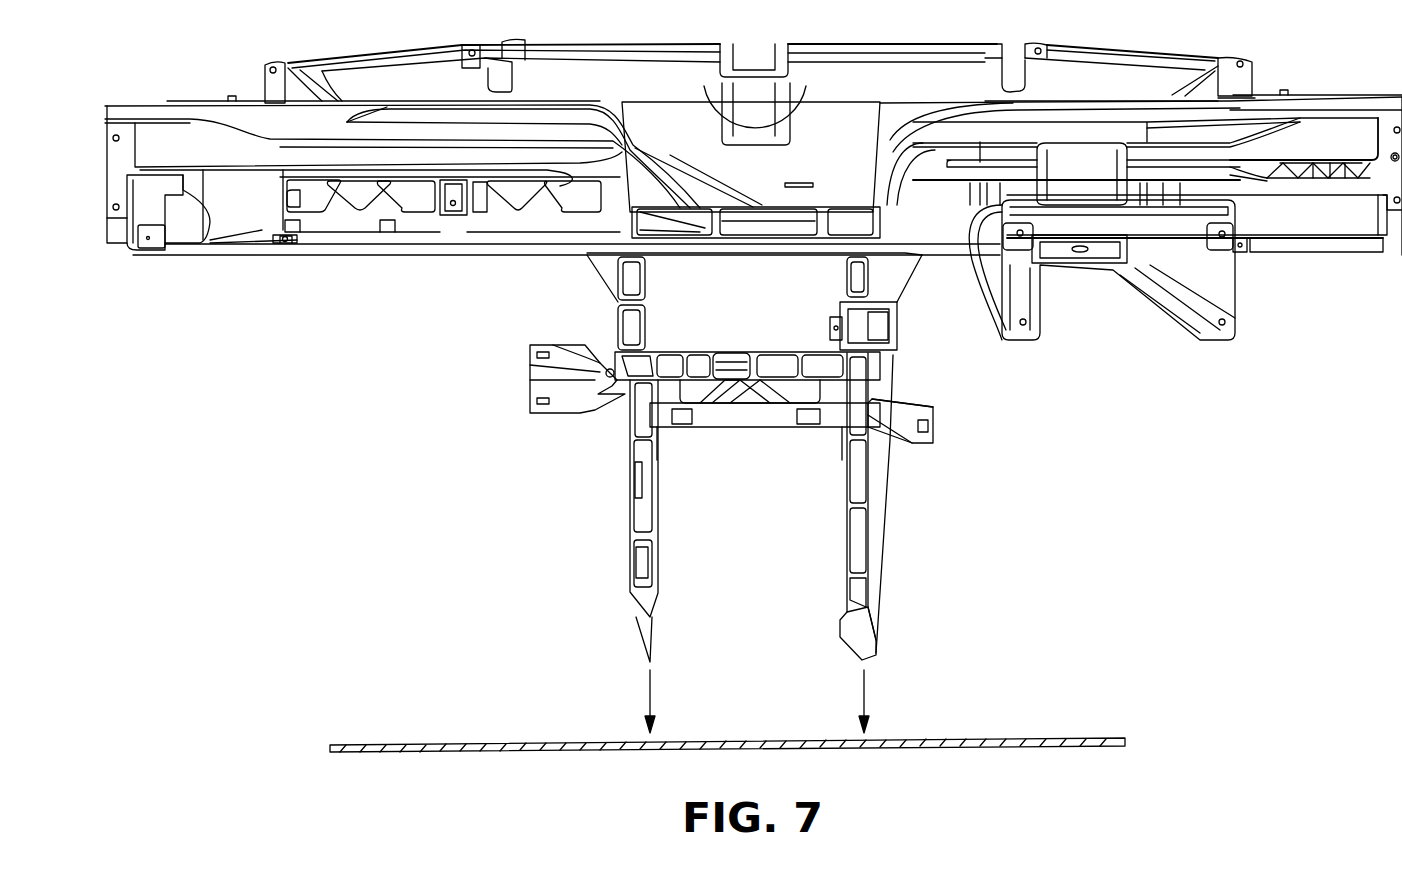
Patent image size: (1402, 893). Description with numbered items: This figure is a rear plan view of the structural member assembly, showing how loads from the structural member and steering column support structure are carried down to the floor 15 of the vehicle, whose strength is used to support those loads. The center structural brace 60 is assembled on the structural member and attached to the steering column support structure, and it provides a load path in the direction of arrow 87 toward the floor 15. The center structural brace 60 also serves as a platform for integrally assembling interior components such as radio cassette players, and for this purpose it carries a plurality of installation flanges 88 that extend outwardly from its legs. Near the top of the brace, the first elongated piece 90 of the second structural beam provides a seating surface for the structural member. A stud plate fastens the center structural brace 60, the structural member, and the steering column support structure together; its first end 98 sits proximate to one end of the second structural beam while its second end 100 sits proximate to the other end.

The floor 15 is at (487, 745).
The center structural brace 60 is at (891, 549).
The arrow 87 is at (648, 695).
The installation flanges 88 is at (530, 390).
The first elongated piece 90 is at (687, 257).
The first end 98 is at (983, 247).
The second end 100 is at (587, 255).